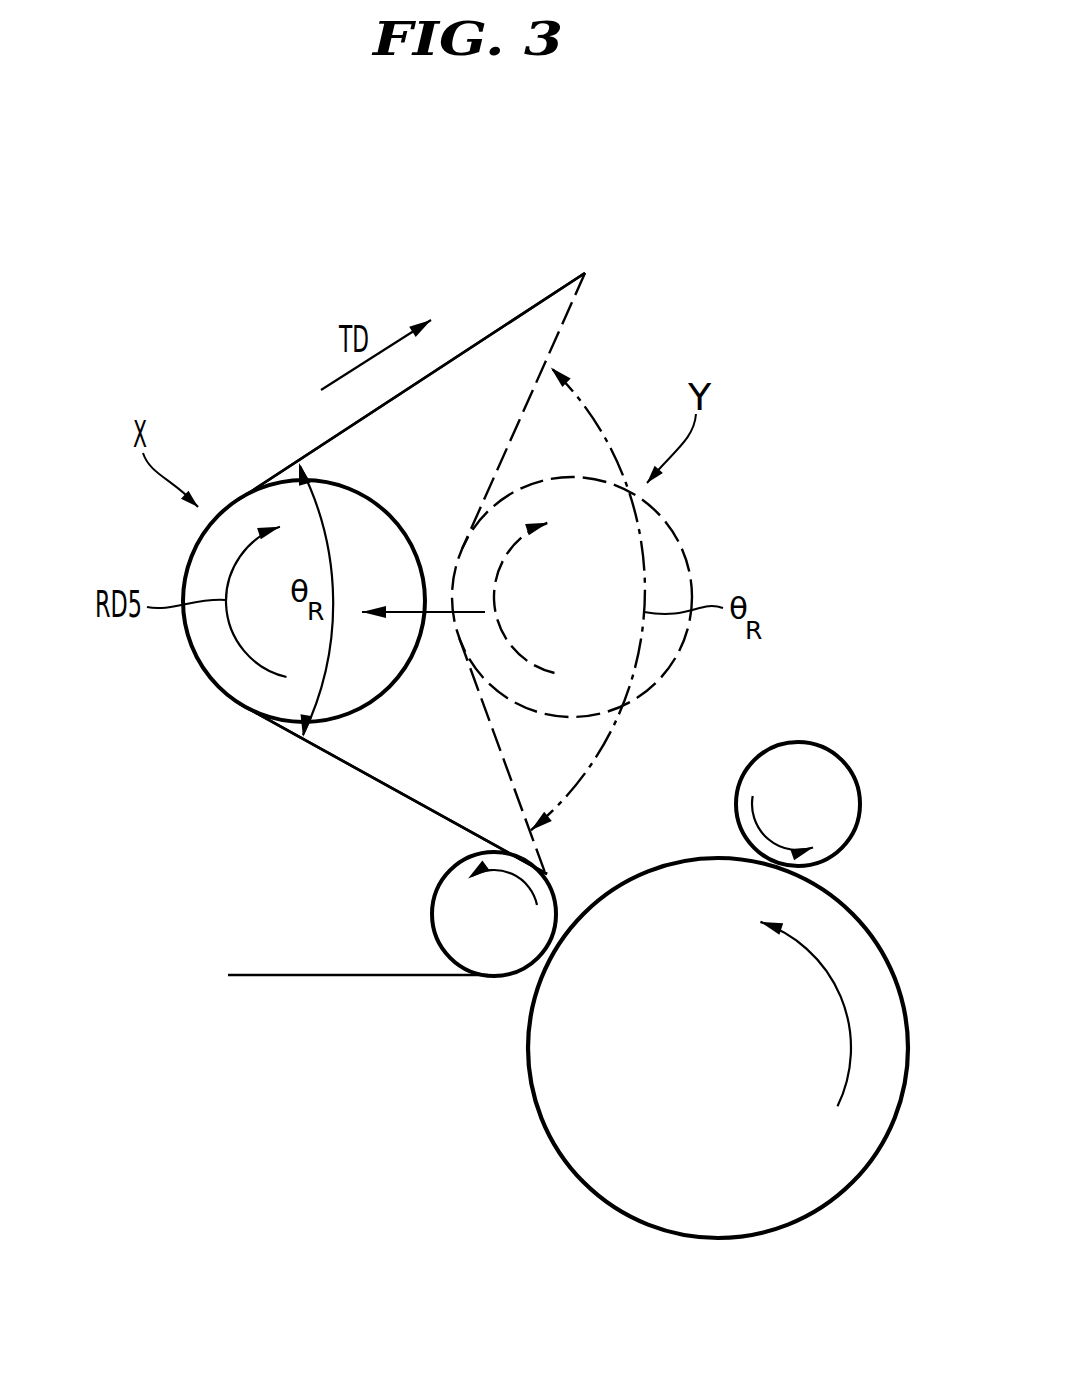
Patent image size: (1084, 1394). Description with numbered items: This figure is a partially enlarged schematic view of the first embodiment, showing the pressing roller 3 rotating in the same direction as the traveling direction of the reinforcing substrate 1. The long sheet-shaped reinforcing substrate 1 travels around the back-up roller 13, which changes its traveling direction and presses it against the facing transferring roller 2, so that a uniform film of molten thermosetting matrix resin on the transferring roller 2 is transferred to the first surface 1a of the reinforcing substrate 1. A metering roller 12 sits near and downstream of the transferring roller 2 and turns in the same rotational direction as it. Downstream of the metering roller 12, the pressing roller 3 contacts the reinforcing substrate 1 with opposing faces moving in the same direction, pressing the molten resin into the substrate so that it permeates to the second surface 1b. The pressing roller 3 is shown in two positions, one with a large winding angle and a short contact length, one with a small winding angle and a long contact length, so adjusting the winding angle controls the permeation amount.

The reinforcing substrate 1 is at (318, 975).
The first surface 1a is at (382, 779).
The second surface 1b is at (359, 773).
The transferring roller 2 is at (818, 1213).
The pressing roller 3 is at (208, 680).
The metering roller 12 is at (858, 783).
The back-up roller 13 is at (433, 905).